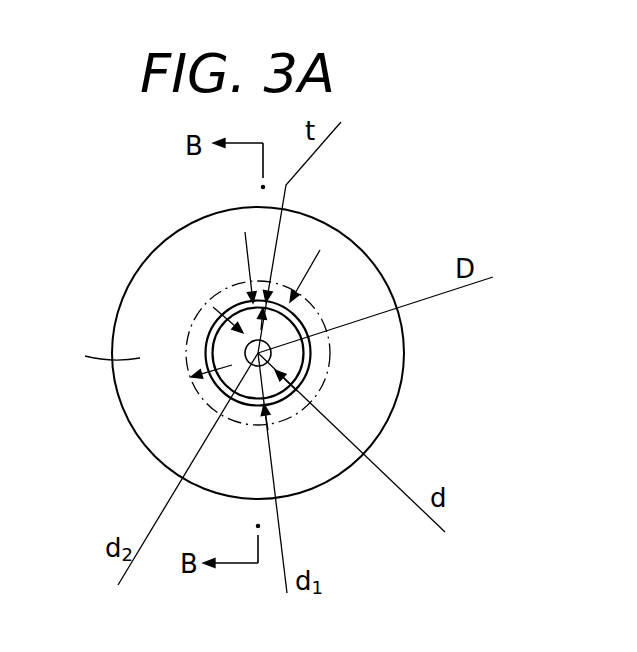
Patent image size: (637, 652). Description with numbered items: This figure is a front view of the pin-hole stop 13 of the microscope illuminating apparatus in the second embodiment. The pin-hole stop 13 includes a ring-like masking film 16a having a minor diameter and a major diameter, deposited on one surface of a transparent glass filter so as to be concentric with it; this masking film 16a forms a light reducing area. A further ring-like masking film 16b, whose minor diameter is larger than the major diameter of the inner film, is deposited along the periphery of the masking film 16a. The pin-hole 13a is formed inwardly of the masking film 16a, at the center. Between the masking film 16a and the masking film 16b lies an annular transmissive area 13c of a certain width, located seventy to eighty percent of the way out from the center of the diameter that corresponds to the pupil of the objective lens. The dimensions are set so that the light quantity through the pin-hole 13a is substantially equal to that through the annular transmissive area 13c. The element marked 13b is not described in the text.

The pin-hole stop 13 is at (314, 455).
The pin-hole 13a is at (217, 337).
The outer boundary circle (dash-dot) 13b is at (203, 397).
The annular transmissive area 13c is at (300, 317).
The ring-like masking film 16a is at (293, 360).
The ring-like masking film 16b is at (87, 354).